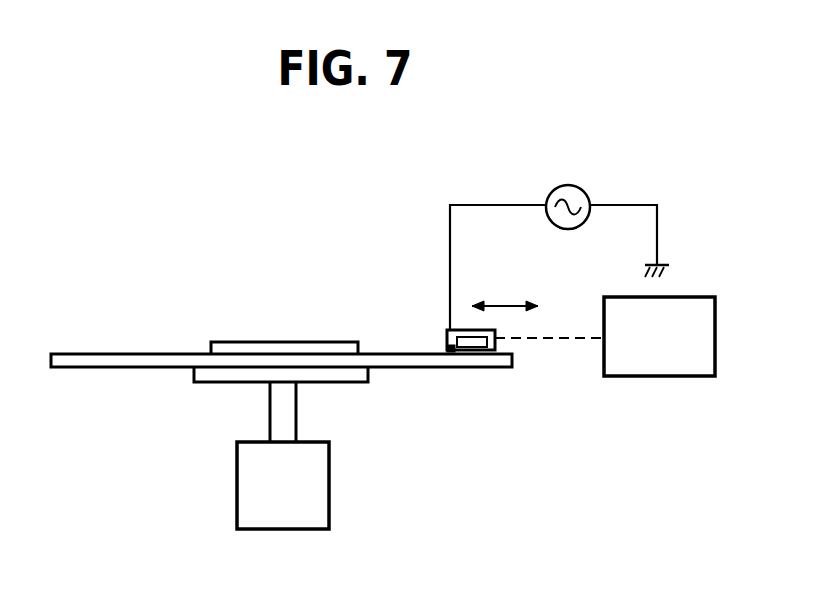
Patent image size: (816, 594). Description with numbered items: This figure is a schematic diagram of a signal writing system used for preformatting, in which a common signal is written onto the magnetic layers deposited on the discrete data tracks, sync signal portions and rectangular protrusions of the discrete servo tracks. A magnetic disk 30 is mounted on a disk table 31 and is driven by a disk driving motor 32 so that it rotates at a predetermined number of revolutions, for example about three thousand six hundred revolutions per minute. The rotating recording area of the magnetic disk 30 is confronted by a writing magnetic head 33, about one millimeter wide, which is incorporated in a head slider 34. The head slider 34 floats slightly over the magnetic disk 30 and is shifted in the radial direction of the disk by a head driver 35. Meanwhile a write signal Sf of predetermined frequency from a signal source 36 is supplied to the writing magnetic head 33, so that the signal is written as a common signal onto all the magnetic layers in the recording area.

The magnetic disk 30 is at (134, 354).
The disk table 31 is at (212, 381).
The disk driving motor 32 is at (320, 497).
The writing magnetic head 33 is at (446, 348).
The head slider 34 is at (495, 330).
The head driver 35 is at (660, 377).
The signal source 36 is at (585, 190).